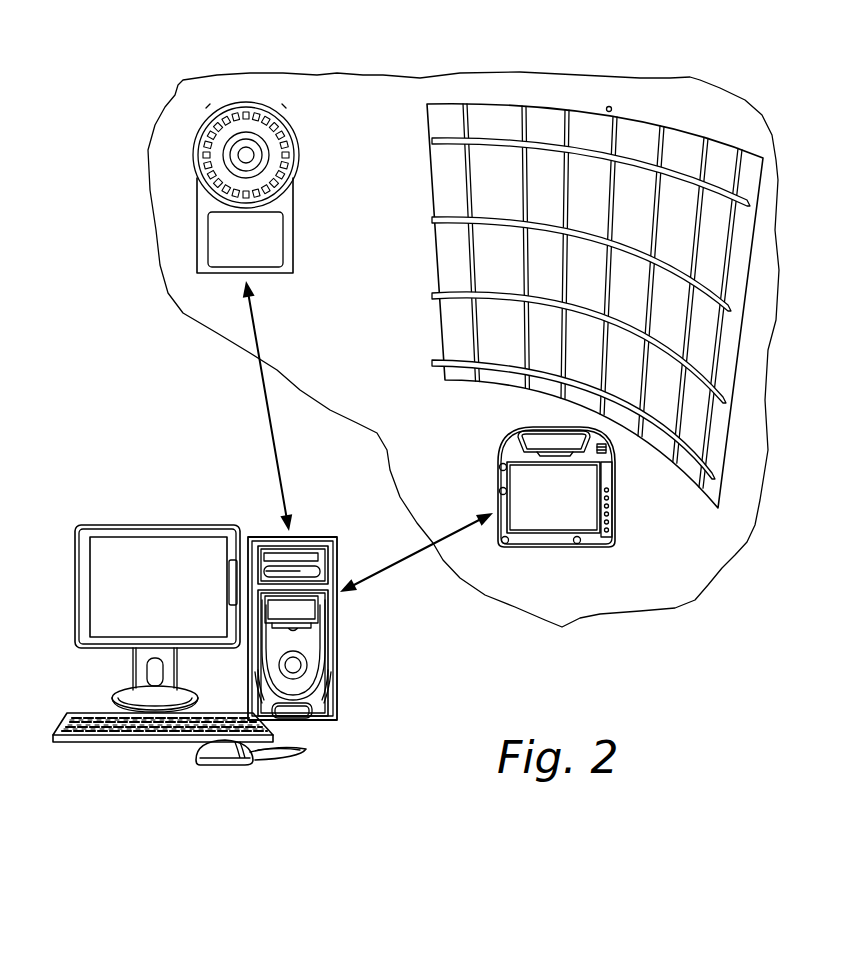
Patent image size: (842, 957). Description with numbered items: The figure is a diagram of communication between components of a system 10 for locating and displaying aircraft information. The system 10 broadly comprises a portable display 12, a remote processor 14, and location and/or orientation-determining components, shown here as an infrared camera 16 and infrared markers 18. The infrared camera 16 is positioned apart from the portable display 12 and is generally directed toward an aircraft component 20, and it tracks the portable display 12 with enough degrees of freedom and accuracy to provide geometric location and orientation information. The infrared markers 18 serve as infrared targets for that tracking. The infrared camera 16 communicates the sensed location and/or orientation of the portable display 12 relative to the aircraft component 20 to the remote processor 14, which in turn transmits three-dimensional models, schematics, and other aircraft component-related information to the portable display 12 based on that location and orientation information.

The system for locating and displaying aircraft information 10 is at (78, 75).
The portable display 12 is at (545, 548).
The remote processor 14 is at (362, 760).
The infrared camera 16 is at (293, 260).
The infrared marker 18 is at (613, 106).
The aircraft component 20 is at (665, 438).